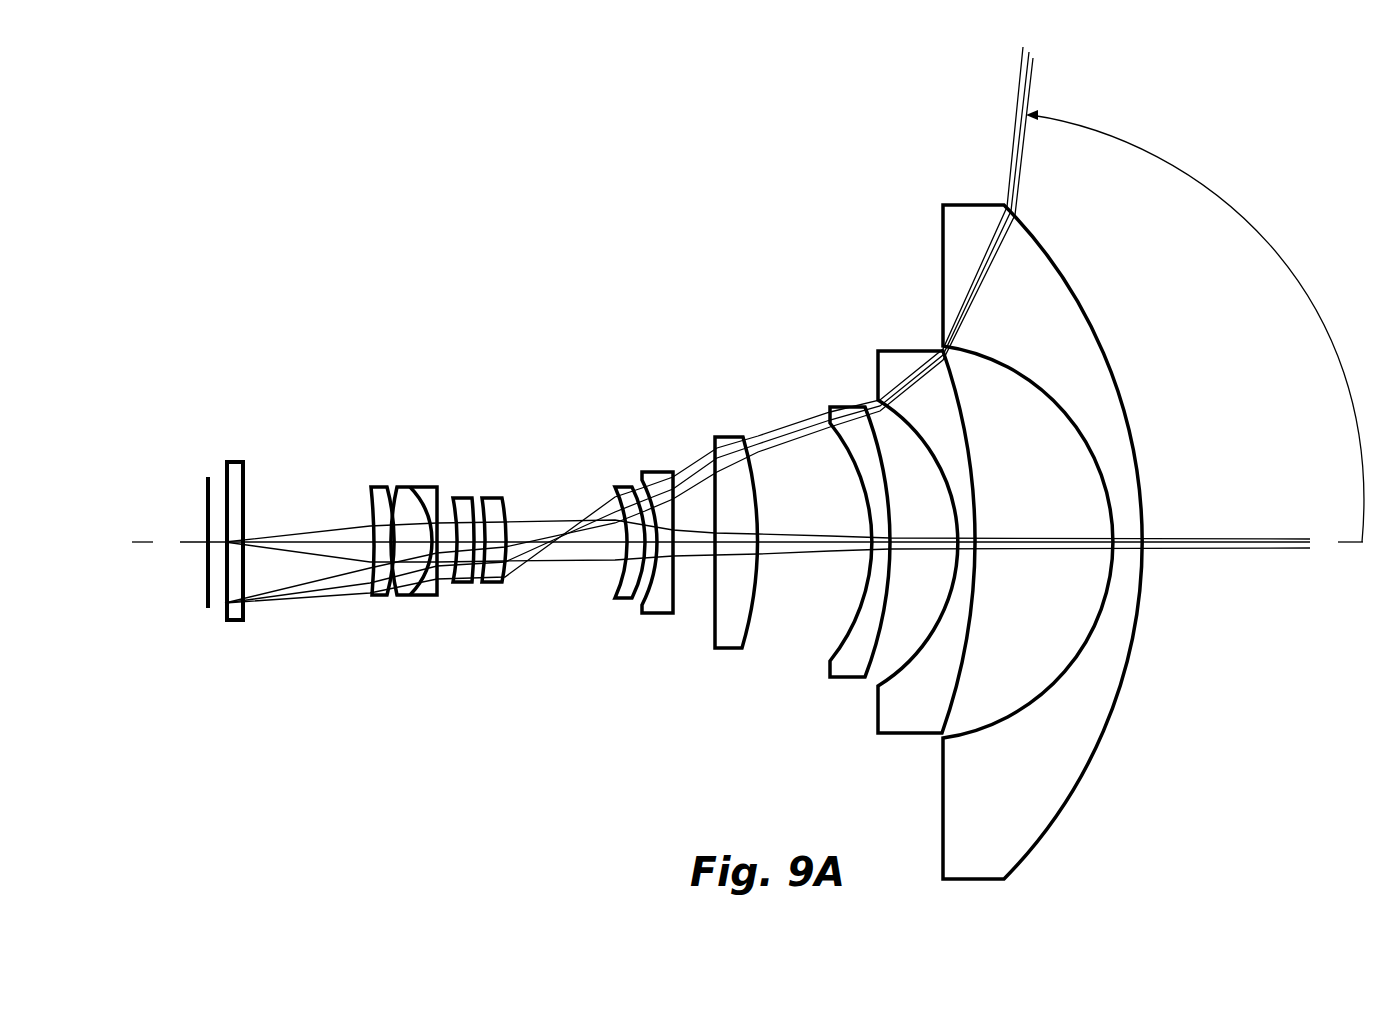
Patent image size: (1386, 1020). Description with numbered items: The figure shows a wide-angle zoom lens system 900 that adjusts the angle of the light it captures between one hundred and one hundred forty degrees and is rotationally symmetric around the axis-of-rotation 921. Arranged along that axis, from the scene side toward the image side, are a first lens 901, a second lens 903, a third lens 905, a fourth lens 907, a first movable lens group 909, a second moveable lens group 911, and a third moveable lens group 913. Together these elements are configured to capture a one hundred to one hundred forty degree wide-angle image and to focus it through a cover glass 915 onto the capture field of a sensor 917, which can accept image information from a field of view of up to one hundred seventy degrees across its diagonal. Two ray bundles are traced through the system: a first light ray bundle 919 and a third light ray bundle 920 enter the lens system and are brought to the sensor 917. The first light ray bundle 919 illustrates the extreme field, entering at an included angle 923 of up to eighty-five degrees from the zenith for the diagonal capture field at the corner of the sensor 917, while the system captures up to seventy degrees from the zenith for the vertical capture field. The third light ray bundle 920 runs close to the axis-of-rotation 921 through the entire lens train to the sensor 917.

The wide-angle zoom lens system 900 is at (333, 742).
The first lens 901 is at (1038, 821).
The second lens 903 is at (936, 718).
The third lens 905 is at (832, 407).
The fourth lens 907 is at (723, 436).
The first movable lens group 909 is at (682, 462).
The second moveable lens group 911 is at (512, 587).
The third moveable lens group 913 is at (445, 483).
The cover glass 915 is at (237, 460).
The sensor 917 is at (207, 505).
The first light ray bundle 919 is at (1010, 157).
The third light ray bundle 920 is at (1212, 542).
The axis-of-rotation 921 is at (148, 543).
The included angle 923 is at (1345, 371).